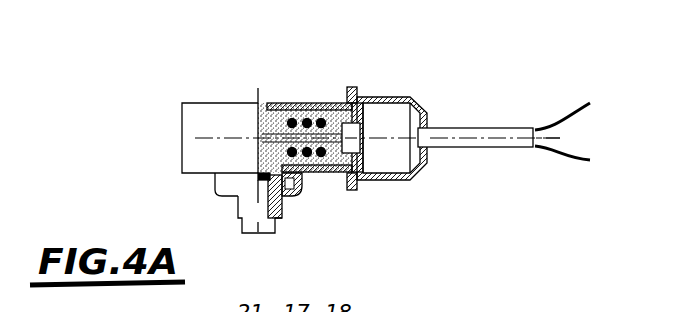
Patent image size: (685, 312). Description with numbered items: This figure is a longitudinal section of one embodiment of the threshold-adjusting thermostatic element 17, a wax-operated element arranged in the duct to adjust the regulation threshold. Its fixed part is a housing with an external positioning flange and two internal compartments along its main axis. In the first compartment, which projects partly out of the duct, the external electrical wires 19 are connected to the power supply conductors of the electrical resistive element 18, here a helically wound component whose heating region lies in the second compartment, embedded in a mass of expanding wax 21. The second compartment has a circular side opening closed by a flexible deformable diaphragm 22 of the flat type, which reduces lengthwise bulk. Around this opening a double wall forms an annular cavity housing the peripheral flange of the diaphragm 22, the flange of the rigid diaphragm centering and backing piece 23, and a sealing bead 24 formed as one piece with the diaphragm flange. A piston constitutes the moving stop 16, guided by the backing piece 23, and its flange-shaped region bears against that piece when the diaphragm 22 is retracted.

The moving stop 16 is at (252, 228).
The threshold-adjusting thermostatic element 17 is at (293, 105).
The electrical resistive element 18 is at (322, 110).
The external electrical wires 19 is at (575, 152).
The expanding wax 21 is at (268, 108).
The flexible deformable diaphragm 22 is at (268, 172).
The diaphragm centering and backing piece 23 is at (222, 191).
The sealing bead 24 is at (296, 196).